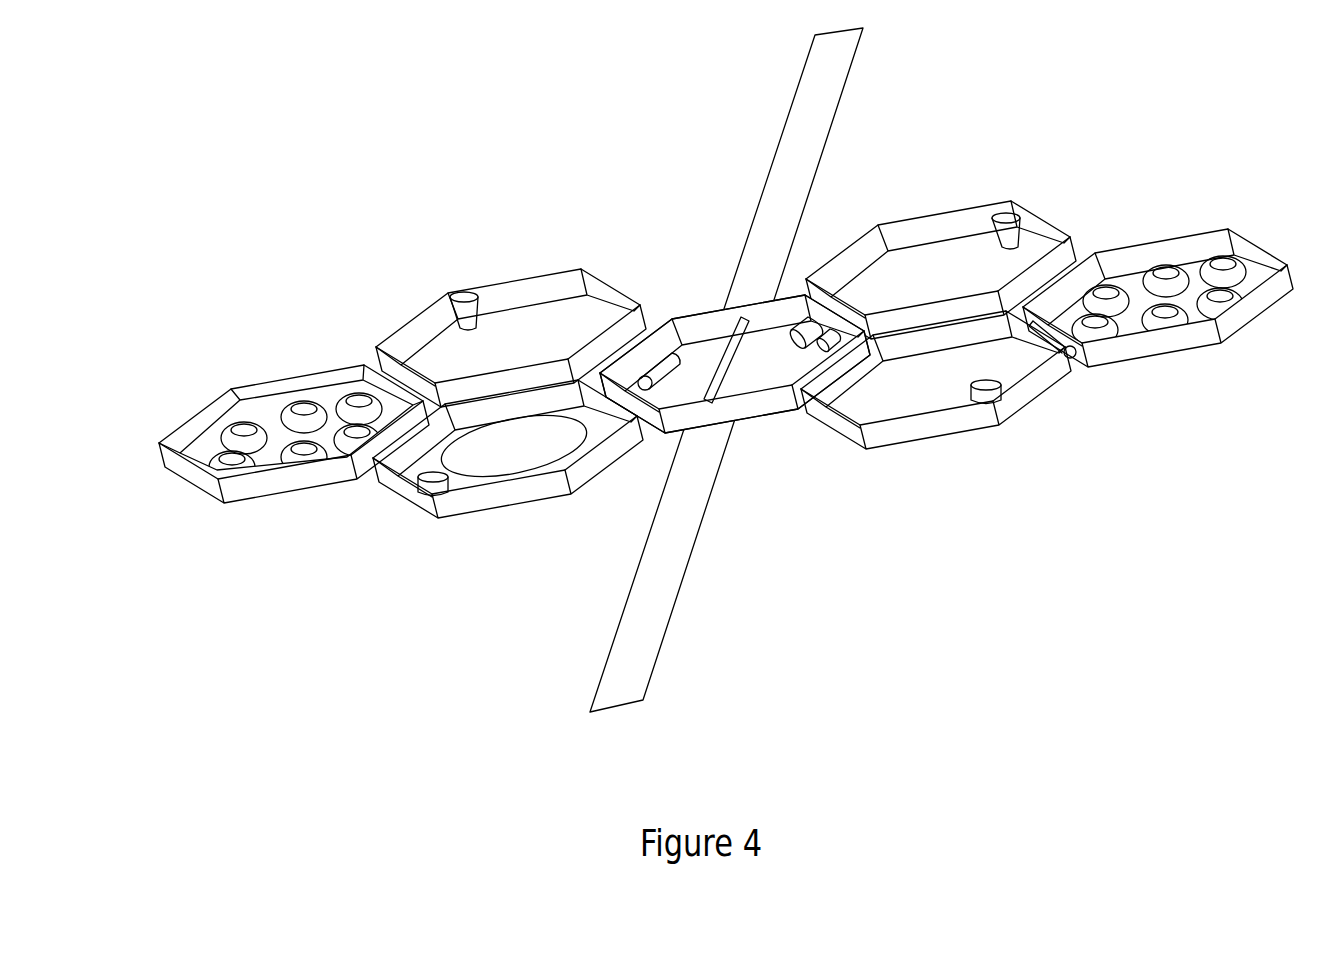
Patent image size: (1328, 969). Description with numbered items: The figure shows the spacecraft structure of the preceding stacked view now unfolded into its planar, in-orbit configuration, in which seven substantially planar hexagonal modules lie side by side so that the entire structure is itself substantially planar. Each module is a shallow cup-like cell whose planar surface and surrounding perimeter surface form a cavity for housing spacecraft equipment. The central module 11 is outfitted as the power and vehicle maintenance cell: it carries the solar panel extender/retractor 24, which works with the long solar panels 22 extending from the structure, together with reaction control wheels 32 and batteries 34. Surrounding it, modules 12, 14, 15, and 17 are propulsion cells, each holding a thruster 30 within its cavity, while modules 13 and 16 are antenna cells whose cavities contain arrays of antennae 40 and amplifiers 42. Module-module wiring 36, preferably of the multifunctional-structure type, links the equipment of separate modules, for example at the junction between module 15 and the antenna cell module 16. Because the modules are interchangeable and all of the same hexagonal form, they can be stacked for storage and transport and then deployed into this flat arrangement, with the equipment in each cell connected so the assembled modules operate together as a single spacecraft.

The module 11 is at (706, 336).
The module 12 is at (545, 300).
The module 13 is at (280, 491).
The module 14 is at (478, 510).
The module 15 is at (905, 445).
The module 16 is at (1128, 363).
The module 17 is at (923, 243).
The solar panels 22 is at (862, 42).
The solar panel extender/retractor 24 is at (731, 369).
The thrusters 30 is at (457, 292).
The reaction control wheels 32 is at (807, 328).
The batteries 34 is at (657, 372).
The module-module wiring 36 is at (1072, 360).
The antennae 40 is at (1165, 275).
The amplifiers 42 is at (238, 430).